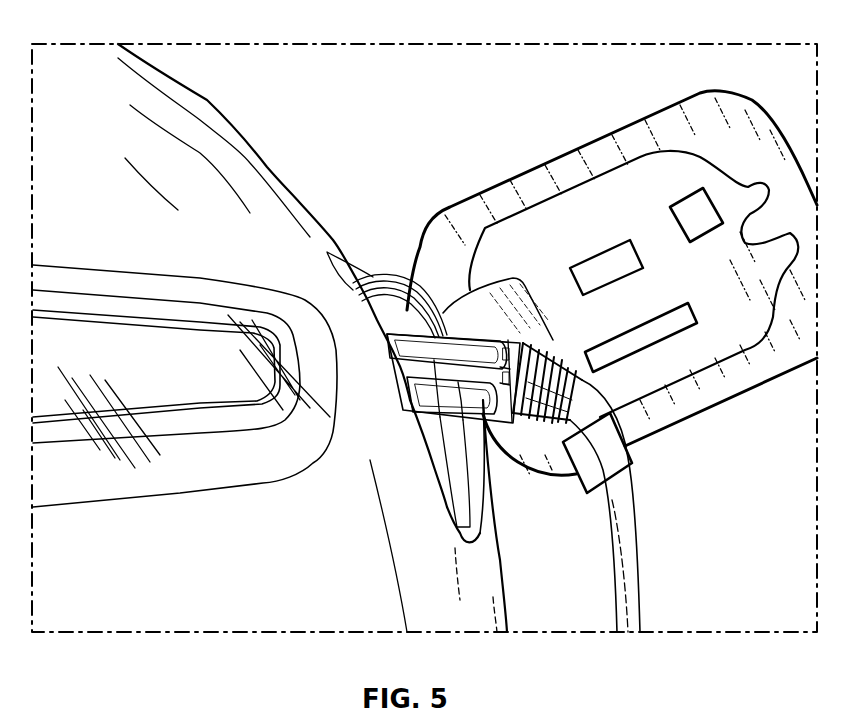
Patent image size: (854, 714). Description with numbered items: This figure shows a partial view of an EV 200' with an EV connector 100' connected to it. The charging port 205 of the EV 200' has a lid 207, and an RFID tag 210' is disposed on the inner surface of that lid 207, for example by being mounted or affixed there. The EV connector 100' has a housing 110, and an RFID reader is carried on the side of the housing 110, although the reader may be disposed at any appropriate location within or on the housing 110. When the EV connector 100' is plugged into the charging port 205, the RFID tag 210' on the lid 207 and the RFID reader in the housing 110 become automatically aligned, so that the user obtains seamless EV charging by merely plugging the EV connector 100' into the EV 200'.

The EV 200' is at (270, 321).
The charging port 205 is at (383, 277).
The lid 207 is at (723, 93).
The RFID tag 210' is at (640, 272).
The housing 110 is at (440, 320).
The EV connector 100' is at (491, 483).